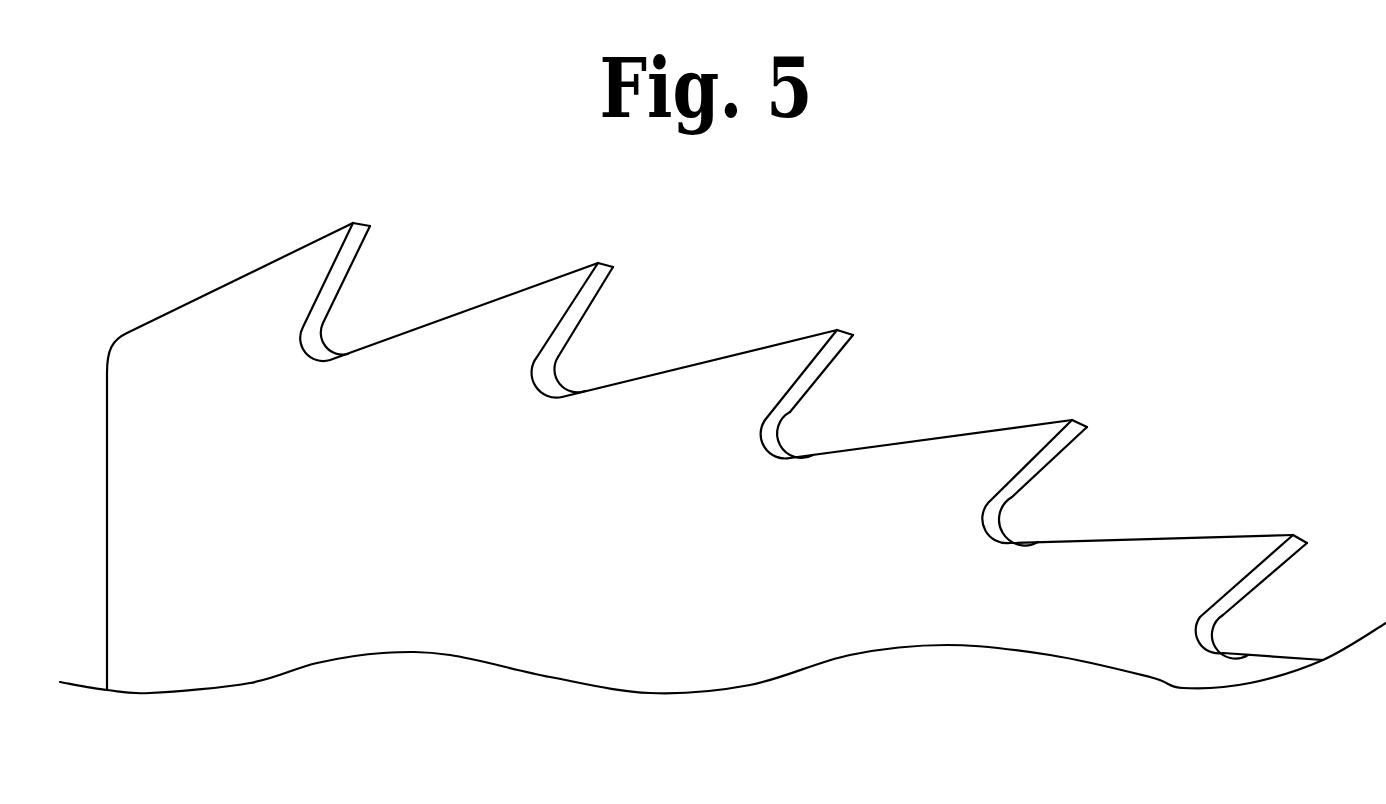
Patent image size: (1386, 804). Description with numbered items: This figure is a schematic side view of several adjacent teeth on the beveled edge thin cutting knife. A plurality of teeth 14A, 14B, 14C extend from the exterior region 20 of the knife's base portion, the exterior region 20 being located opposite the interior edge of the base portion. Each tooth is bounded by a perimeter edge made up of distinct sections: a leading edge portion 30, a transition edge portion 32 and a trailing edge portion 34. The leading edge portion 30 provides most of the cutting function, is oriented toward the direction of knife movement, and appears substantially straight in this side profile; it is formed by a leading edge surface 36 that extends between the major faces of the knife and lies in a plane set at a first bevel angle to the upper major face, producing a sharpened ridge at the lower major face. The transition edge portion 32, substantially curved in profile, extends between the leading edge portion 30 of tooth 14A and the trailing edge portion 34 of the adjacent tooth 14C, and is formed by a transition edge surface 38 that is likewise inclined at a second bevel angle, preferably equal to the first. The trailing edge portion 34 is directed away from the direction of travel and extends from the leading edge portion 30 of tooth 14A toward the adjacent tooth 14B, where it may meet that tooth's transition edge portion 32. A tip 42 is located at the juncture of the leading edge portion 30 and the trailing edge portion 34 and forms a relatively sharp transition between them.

The tooth 14A is at (916, 344).
The tooth 14B is at (646, 291).
The tooth 14C is at (993, 457).
The exterior region 20 is at (475, 527).
The leading edge portion 30 is at (593, 303).
The transition edge portion 32 is at (565, 368).
The trailing edge portion 34 is at (742, 350).
The leading edge surface 36 is at (827, 358).
The transition edge surface 38 is at (783, 433).
The tip 42 is at (608, 266).